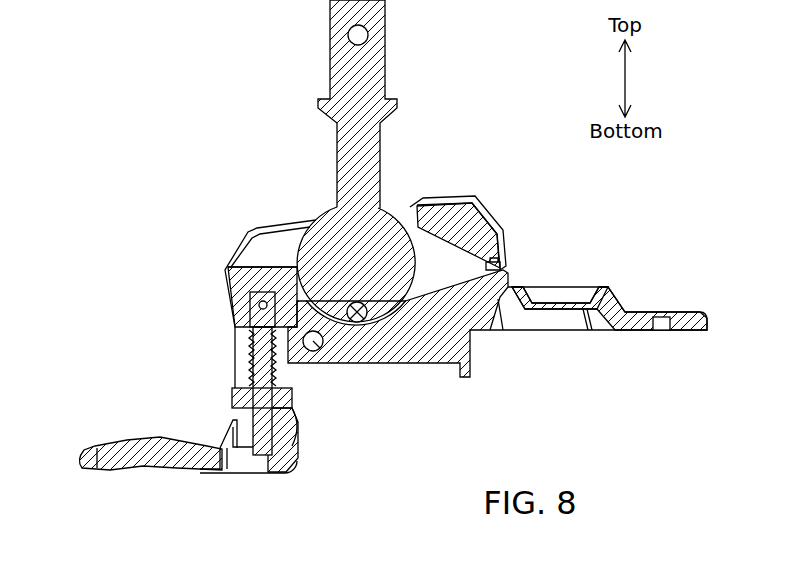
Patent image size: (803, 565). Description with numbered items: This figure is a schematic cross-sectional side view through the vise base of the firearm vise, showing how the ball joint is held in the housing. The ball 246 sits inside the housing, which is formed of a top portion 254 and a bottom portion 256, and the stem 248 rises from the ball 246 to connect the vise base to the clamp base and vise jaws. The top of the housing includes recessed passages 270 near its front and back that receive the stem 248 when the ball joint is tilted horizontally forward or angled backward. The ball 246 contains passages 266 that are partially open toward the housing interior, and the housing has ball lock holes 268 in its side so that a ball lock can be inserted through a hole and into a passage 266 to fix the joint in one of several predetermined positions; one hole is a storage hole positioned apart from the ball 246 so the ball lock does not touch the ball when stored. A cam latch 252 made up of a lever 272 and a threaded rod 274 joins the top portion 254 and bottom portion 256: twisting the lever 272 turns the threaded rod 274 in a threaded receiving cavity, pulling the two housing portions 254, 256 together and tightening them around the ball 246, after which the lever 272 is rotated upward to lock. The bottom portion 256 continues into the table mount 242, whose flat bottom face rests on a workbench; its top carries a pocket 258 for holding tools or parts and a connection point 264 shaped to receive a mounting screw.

The table mount 242 is at (598, 313).
The ball 246 is at (330, 232).
The stem 248 is at (343, 150).
The cam latch 252 is at (151, 424).
The top portion of housing 254 is at (237, 298).
The bottom portion of housing 256 is at (466, 350).
The pocket 258 is at (553, 290).
The connection point 264 is at (668, 316).
The passage 266 is at (362, 320).
The ball lock hole 268 is at (313, 348).
The recessed passage 270 is at (250, 270).
The lever 272 is at (156, 446).
The threaded rod 274 is at (250, 353).